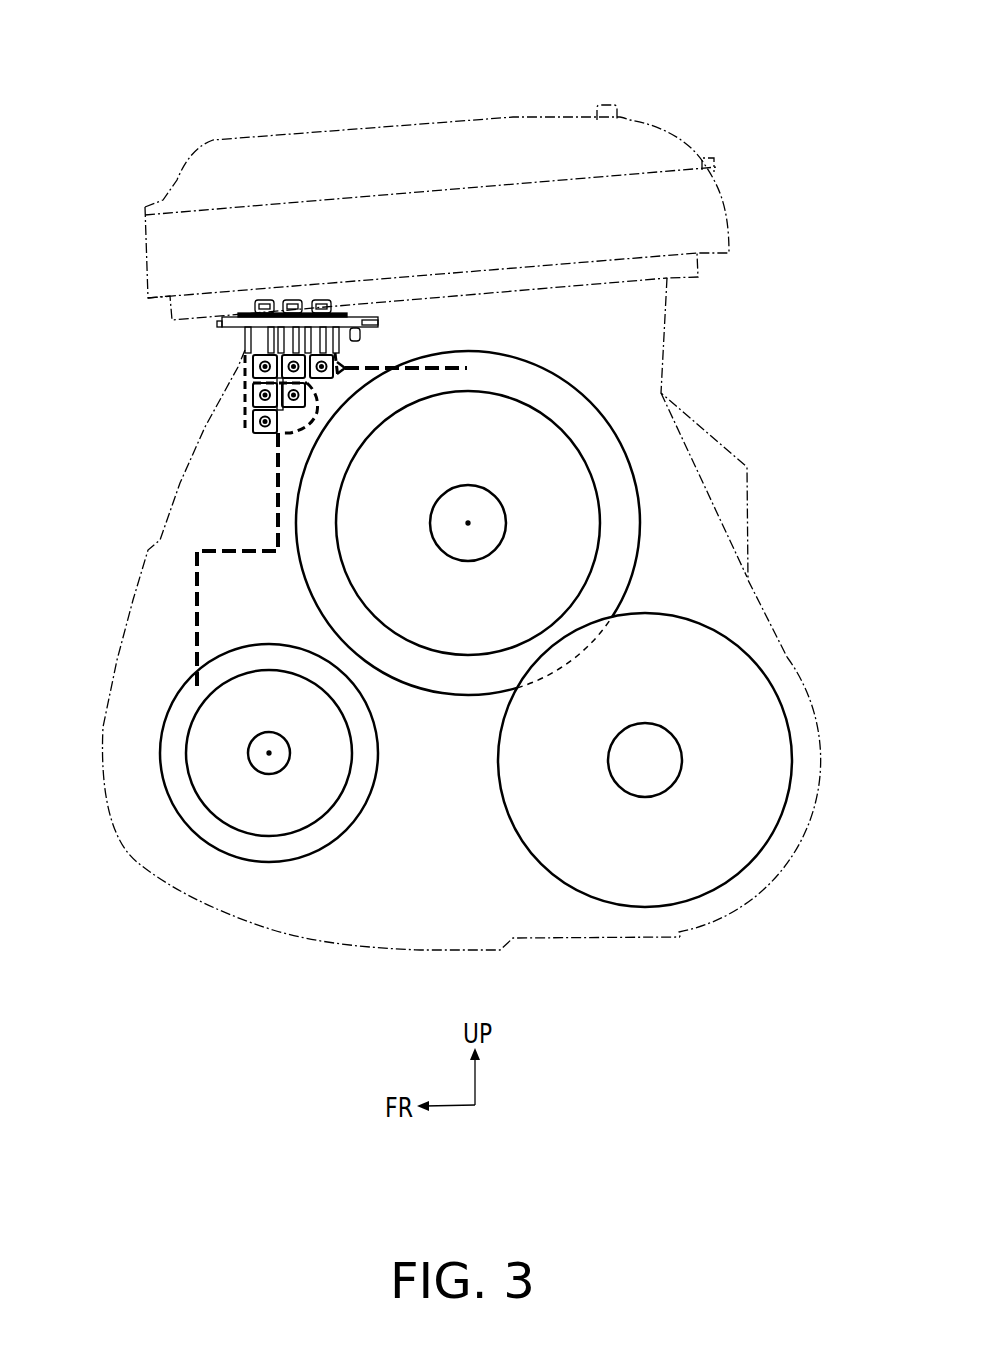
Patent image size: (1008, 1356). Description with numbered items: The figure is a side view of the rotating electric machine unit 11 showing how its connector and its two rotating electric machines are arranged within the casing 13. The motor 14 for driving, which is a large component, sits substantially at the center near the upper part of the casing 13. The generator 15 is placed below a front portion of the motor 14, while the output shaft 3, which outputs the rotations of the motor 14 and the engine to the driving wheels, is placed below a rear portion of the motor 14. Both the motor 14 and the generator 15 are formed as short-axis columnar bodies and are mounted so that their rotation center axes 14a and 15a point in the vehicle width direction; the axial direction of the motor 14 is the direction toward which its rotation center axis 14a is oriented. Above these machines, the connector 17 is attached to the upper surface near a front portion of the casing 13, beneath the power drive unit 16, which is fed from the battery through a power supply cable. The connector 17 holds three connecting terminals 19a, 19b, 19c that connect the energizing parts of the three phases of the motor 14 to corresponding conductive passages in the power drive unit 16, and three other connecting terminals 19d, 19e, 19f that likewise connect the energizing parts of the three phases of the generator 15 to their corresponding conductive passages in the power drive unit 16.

The output shaft 3 is at (675, 790).
The rotating electric machine unit 11 is at (672, 384).
The casing 13 is at (767, 618).
The motor 14 is at (643, 527).
The rotation center axis 14a is at (468, 522).
The generator 15 is at (313, 856).
The rotation center axis 15a is at (268, 772).
The power drive unit 16 is at (514, 110).
The connector 17 is at (229, 306).
The connecting terminal 19a is at (268, 350).
The connecting terminal 19b is at (292, 338).
The connecting terminal 19c is at (320, 338).
The connecting terminal 19d is at (238, 366).
The connecting terminal 19e is at (268, 398).
The connecting terminal 19f is at (262, 428).